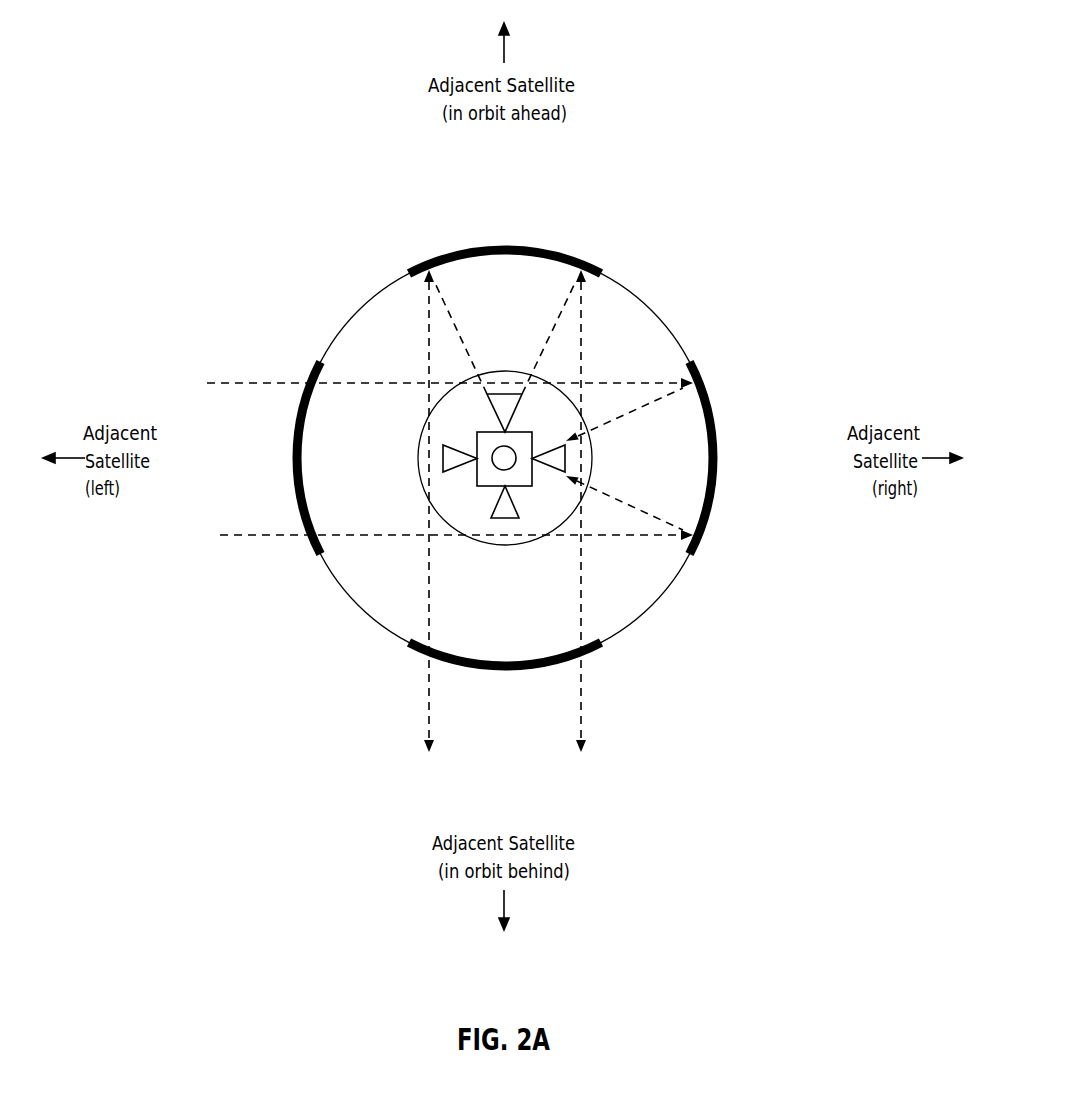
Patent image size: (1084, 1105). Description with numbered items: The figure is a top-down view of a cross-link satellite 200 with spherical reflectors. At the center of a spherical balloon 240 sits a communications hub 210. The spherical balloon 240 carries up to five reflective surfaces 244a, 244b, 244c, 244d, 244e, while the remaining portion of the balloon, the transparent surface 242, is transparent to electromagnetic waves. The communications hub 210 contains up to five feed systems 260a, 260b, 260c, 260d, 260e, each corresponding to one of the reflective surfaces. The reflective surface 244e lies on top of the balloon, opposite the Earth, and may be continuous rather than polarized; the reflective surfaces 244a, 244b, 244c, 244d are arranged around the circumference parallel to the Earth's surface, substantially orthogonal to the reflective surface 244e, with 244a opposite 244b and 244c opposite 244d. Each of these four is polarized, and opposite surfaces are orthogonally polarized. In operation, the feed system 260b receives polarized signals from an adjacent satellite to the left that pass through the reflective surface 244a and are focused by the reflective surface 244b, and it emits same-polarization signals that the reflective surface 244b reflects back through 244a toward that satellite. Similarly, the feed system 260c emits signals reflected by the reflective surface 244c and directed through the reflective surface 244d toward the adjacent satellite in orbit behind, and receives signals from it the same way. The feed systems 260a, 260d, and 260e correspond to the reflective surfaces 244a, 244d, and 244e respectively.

The cross-link satellite 200 is at (786, 187).
The communications hub 210 is at (539, 493).
The spherical balloon 240 is at (298, 638).
The transparent surface 242 is at (505, 458).
The reflective surface 244a is at (279, 458).
The reflective surface 244b is at (730, 458).
The reflective surface 244c is at (476, 266).
The reflective surface 244d is at (478, 653).
The reflective surface 244e is at (480, 458).
The feed system 260a is at (443, 458).
The feed system 260b is at (568, 458).
The feed system 260c is at (483, 413).
The feed system 260d is at (482, 502).
The feed system 260e is at (513, 451).